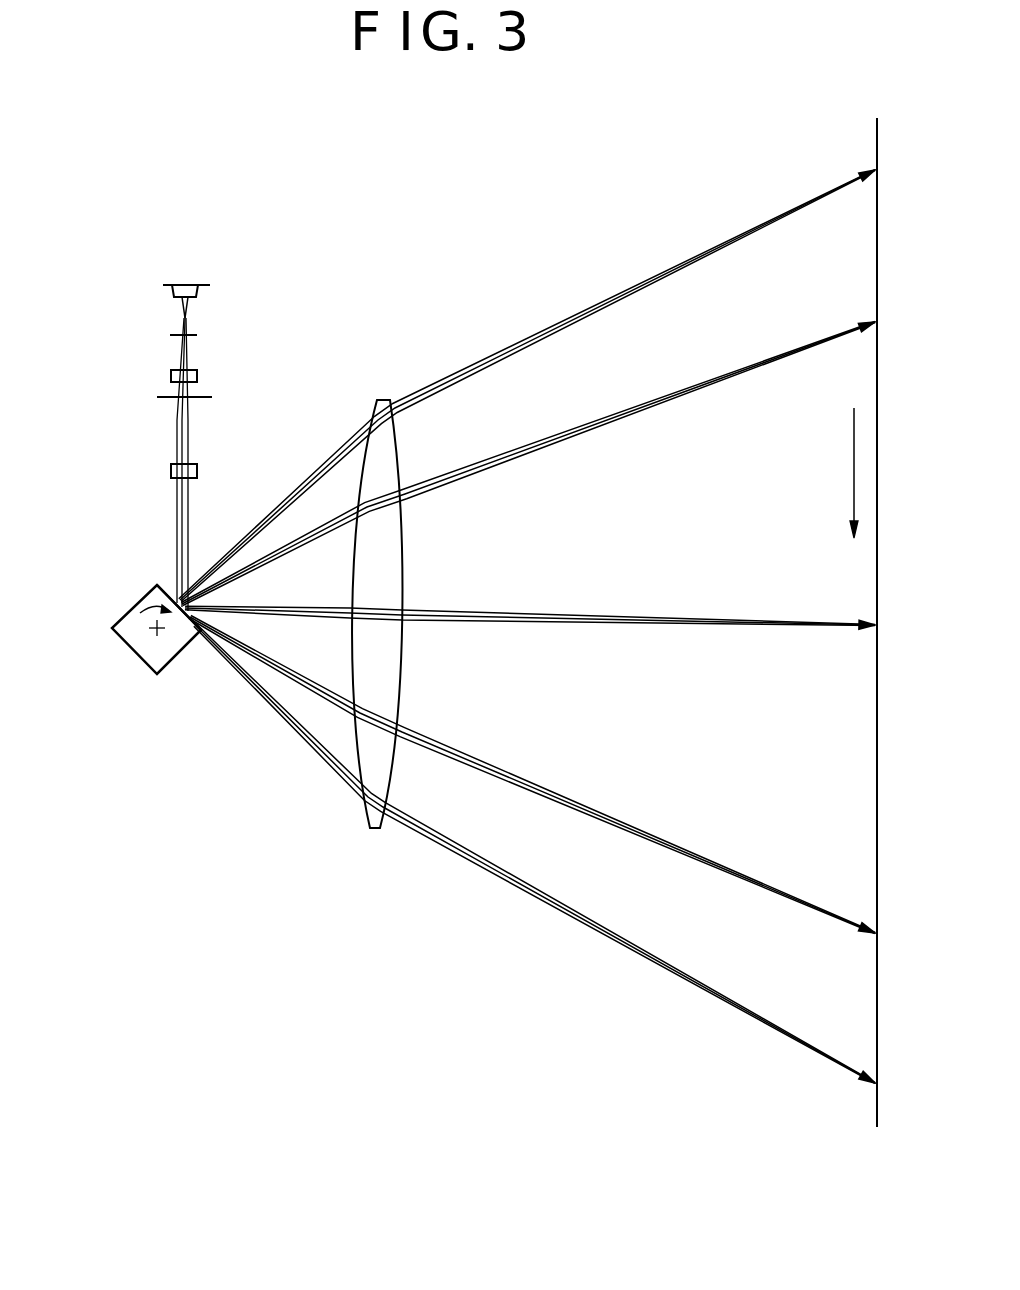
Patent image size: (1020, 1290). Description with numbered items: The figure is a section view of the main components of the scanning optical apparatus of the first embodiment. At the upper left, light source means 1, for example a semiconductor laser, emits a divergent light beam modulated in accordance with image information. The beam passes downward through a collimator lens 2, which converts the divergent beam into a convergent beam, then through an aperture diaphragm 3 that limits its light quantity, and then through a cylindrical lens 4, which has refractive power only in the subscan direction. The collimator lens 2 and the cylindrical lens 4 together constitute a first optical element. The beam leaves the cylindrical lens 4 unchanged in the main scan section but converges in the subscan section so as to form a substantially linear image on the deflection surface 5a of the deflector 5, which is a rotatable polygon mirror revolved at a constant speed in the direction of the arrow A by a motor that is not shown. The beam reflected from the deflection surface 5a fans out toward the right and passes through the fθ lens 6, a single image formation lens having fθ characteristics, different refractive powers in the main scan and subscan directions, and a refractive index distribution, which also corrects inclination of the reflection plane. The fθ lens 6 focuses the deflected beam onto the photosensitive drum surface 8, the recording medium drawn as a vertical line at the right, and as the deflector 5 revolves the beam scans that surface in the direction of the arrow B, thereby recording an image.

The light source means 1 is at (168, 286).
The collimator lens 2 is at (171, 376).
The aperture diaphragm 3 is at (168, 399).
The cylindrical lens 4 is at (171, 472).
The deflector 5 is at (132, 652).
The deflection surface 5a is at (167, 580).
The arrow A is at (150, 600).
The fθ lens 6 is at (370, 816).
The photosensitive drum surface 8 is at (875, 805).
The arrow B is at (854, 467).